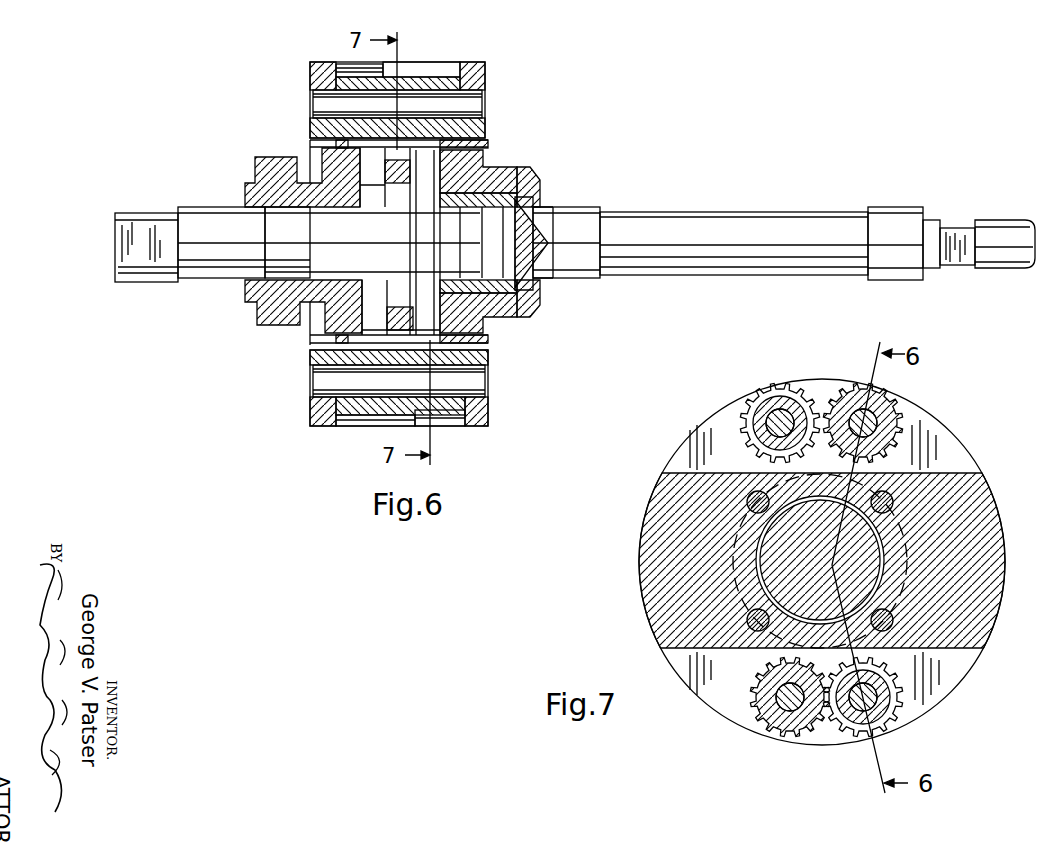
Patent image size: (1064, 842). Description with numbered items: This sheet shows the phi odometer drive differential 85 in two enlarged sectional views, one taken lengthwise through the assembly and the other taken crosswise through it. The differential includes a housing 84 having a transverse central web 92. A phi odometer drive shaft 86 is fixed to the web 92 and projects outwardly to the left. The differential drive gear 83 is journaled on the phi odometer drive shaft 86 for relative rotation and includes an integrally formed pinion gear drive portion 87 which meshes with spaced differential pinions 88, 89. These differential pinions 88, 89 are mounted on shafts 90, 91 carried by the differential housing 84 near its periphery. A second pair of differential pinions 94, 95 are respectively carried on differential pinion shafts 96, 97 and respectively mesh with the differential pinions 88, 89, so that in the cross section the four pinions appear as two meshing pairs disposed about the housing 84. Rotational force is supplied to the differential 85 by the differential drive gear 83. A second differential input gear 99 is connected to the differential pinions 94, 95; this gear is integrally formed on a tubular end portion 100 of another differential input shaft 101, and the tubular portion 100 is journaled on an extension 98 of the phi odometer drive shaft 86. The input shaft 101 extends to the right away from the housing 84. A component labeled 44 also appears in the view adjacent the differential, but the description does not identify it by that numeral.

In FIG. 6, the bearing block 44 is at (312, 68).
In FIG. 6, the differential drive gear 83 is at (255, 158).
In FIG. 6, the differential housing 84 is at (490, 410).
In FIG. 7, the differential housing 84 is at (990, 490).
In FIG. 6, the phi odometer drive differential 85 is at (385, 423).
In FIG. 6, the phi odometer drive shaft 86 is at (137, 246).
In FIG. 7, the phi odometer drive shaft 86 is at (772, 548).
In FIG. 6, the pinion gear drive portion 87 is at (325, 330).
In FIG. 6, the differential pinion 88 is at (342, 65).
In FIG. 7, the differential pinion 88 is at (780, 398).
In FIG. 6, the differential pinion 89 is at (345, 421).
In FIG. 7, the differential pinion 89 is at (855, 735).
In FIG. 7, the shaft 90 is at (758, 405).
In FIG. 6, the shaft 91 is at (313, 383).
In FIG. 7, the shaft 91 is at (902, 705).
In FIG. 6, the transverse central web 92 is at (372, 183).
In FIG. 6, the differential pinion 94 is at (425, 66).
In FIG. 7, the differential pinion 94 is at (895, 445).
In FIG. 6, the differential pinion 95 is at (440, 426).
In FIG. 7, the differential pinion 95 is at (752, 715).
In FIG. 6, the differential pinion shaft 96 is at (318, 97).
In FIG. 7, the differential pinion shaft 96 is at (890, 425).
In FIG. 7, the differential pinion shaft 97 is at (775, 730).
In FIG. 6, the extension 98 is at (528, 318).
In FIG. 6, the second differential input gear 99 is at (485, 147).
In FIG. 6, the tubular end portion 100 is at (532, 170).
In FIG. 6, the differential input shaft 101 is at (703, 212).